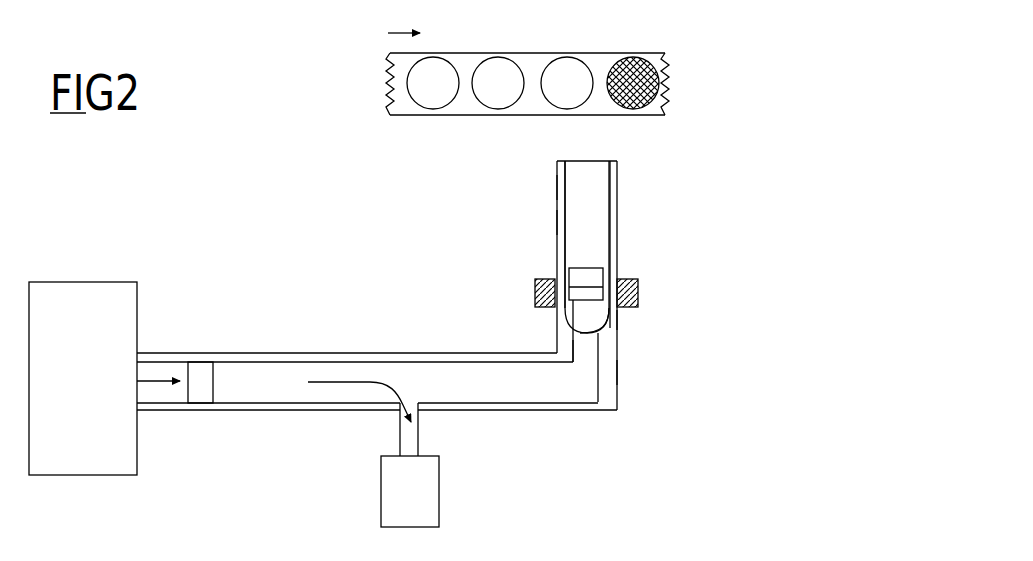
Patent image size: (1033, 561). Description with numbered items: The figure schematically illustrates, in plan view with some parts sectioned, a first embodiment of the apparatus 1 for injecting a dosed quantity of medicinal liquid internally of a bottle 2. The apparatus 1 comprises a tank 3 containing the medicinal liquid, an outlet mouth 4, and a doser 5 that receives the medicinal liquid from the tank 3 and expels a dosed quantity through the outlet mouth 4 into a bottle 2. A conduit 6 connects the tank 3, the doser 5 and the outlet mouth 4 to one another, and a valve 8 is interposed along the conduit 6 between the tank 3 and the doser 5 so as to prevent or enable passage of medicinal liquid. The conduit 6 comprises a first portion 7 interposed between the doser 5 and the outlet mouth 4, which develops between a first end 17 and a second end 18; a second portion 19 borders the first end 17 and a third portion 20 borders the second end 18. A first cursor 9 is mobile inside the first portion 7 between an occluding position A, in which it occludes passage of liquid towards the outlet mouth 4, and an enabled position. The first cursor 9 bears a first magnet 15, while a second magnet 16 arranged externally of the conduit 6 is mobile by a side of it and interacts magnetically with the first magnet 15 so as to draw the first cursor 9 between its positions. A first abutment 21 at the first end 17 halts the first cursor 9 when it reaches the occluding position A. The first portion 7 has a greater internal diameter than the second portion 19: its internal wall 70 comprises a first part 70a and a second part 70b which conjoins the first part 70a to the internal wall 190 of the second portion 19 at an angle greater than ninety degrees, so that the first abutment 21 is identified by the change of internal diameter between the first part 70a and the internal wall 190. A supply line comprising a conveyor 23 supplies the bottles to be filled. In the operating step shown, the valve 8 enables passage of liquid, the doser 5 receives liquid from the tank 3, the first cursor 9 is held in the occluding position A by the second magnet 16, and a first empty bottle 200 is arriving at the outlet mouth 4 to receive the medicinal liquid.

The apparatus 1 is at (568, 458).
The bottle 2 is at (432, 73).
The first empty bottle 200 is at (563, 75).
The conveyor 23 is at (403, 105).
The tank 3 is at (72, 388).
The outlet mouth 4 is at (628, 161).
The doser 5 is at (397, 508).
The conduit 6 is at (296, 348).
The first portion of conduit 7 is at (627, 245).
The valve 8 is at (208, 396).
The first cursor 9 is at (592, 278).
The first magnet 15 is at (582, 290).
The second magnet 16 is at (638, 292).
The first end 17 is at (622, 320).
The second end 18 is at (550, 222).
The second portion of conduit 19 is at (623, 372).
The third portion of conduit 20 is at (550, 188).
The first abutment 21 is at (606, 329).
The internal wall 70 is at (609, 242).
The first part 70a is at (557, 312).
The second part 70b is at (567, 318).
The internal wall of second portion 190 is at (573, 350).
The occluding position A is at (548, 335).